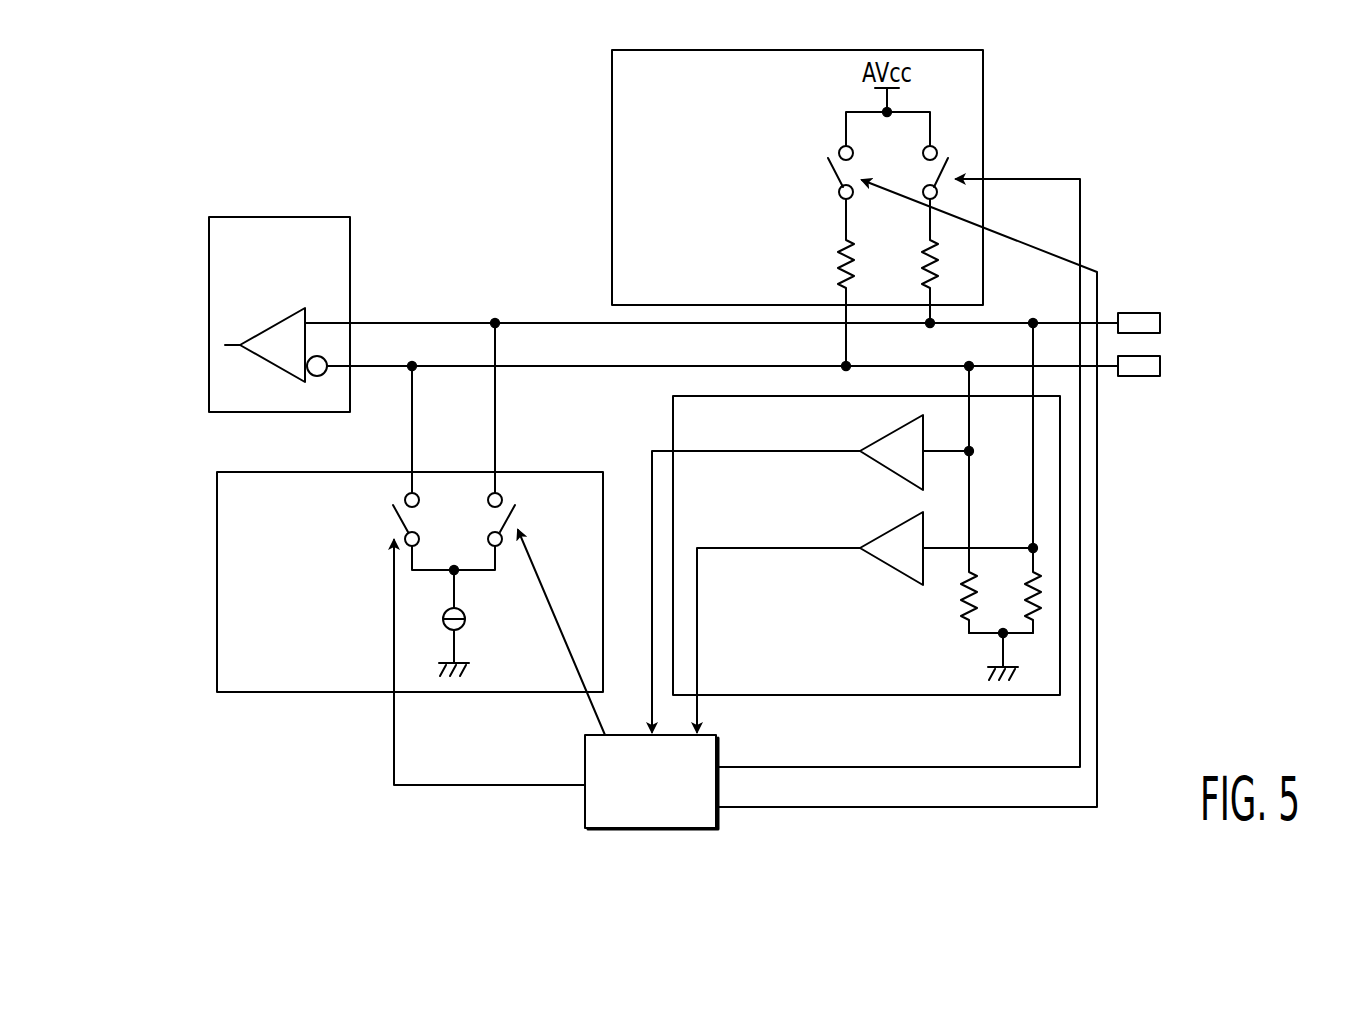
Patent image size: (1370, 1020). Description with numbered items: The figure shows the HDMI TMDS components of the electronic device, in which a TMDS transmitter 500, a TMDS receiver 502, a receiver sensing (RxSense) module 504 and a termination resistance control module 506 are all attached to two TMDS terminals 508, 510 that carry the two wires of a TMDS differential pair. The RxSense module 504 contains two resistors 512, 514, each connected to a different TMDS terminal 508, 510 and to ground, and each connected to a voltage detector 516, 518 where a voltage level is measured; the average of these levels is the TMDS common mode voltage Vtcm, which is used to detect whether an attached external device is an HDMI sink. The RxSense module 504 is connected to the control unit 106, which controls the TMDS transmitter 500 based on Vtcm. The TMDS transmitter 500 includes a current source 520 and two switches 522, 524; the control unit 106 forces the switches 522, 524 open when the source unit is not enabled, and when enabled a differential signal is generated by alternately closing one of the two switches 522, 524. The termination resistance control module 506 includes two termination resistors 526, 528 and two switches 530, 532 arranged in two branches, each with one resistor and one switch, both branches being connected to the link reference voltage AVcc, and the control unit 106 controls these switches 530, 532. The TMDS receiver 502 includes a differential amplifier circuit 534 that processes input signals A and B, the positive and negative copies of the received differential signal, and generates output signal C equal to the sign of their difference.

The control unit 106 is at (585, 812).
The TMDS transmitter 500 is at (217, 490).
The TMDS receiver 502 is at (209, 258).
The receiver sensing (RxSense) module 504 is at (673, 424).
The termination resistance control module 506 is at (612, 87).
The TMDS terminal 508 is at (1160, 318).
The TMDS terminal 510 is at (1160, 366).
The resistor 512 is at (963, 600).
The resistor 514 is at (1045, 590).
The voltage detector 516 is at (868, 437).
The voltage detector 518 is at (876, 560).
The current source 520 is at (464, 626).
The switch 522 is at (392, 510).
The switch 524 is at (513, 508).
The termination resistor 526 is at (938, 264).
The termination resistor 528 is at (838, 266).
The switch 530 is at (830, 156).
The switch 532 is at (952, 158).
The differential amplifier circuit 534 is at (255, 360).